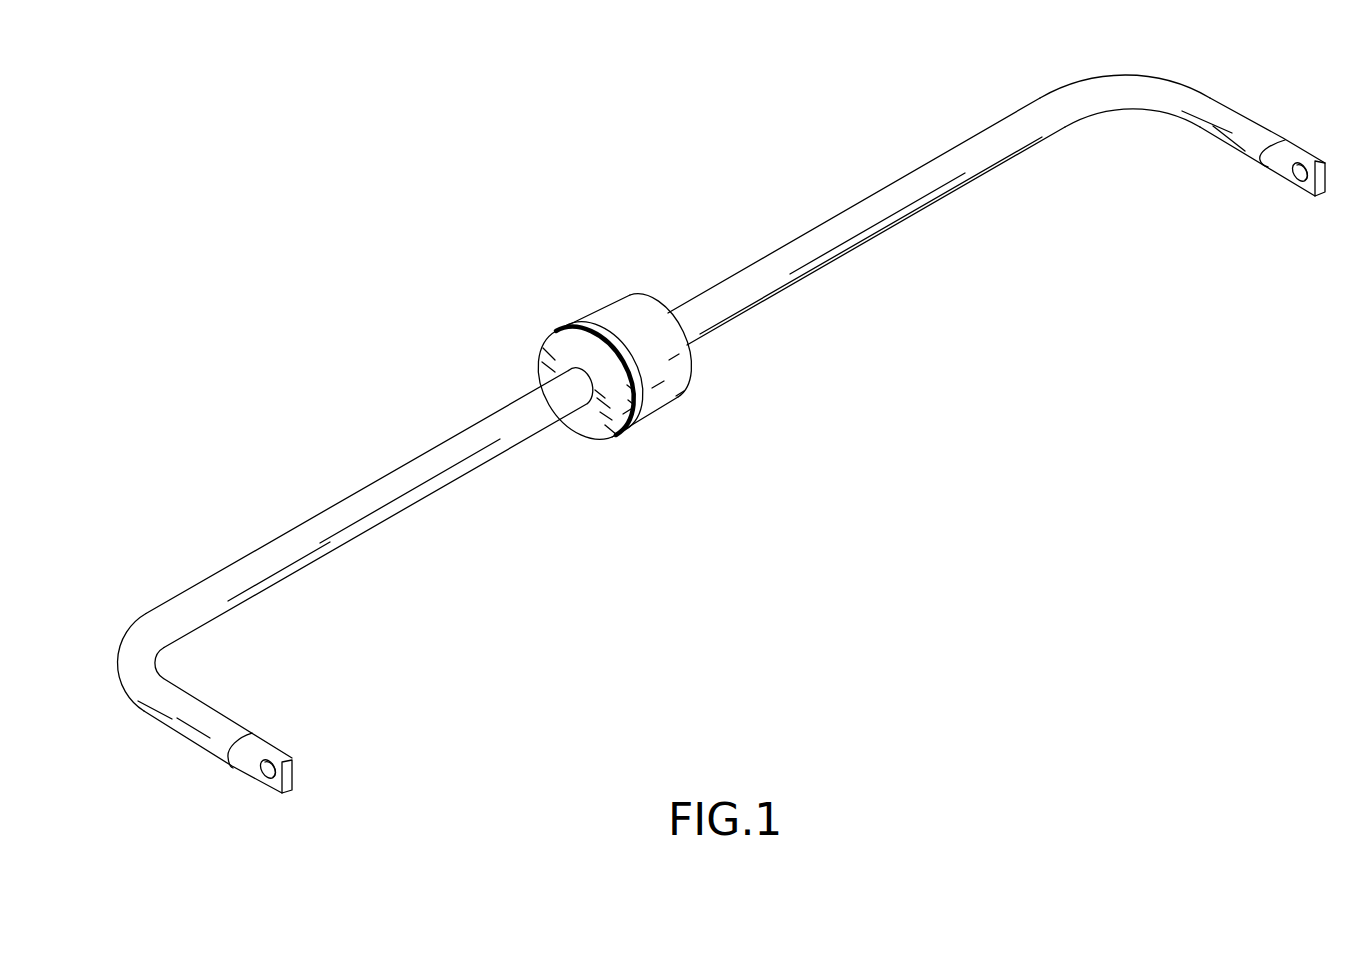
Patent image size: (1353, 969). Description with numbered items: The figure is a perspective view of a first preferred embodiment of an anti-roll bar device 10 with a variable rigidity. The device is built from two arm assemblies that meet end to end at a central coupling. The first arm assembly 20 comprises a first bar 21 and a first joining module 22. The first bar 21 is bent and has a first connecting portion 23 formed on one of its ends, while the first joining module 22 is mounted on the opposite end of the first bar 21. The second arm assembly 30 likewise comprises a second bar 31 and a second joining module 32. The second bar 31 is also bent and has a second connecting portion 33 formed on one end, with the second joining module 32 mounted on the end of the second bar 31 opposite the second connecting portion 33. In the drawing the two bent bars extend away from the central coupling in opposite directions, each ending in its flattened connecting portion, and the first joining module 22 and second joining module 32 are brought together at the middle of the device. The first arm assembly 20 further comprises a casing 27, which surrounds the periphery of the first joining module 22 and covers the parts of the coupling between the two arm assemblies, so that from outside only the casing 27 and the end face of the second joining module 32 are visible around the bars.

The anti-roll bar device 10 is at (673, 255).
The first arm assembly 20 is at (868, 262).
The first bar 21 is at (927, 175).
The first connecting portion 23 is at (1287, 174).
The second arm assembly 30 is at (415, 533).
The second bar 31 is at (327, 524).
The second connecting portion 33 is at (249, 763).
The first joining module 22 is at (588, 296).
The casing 27 is at (662, 387).
The second joining module 32 is at (527, 353).